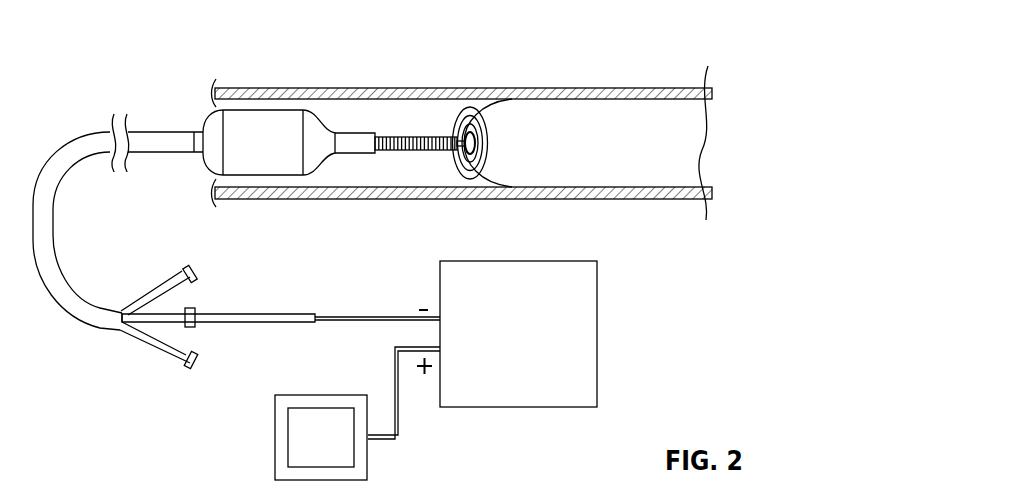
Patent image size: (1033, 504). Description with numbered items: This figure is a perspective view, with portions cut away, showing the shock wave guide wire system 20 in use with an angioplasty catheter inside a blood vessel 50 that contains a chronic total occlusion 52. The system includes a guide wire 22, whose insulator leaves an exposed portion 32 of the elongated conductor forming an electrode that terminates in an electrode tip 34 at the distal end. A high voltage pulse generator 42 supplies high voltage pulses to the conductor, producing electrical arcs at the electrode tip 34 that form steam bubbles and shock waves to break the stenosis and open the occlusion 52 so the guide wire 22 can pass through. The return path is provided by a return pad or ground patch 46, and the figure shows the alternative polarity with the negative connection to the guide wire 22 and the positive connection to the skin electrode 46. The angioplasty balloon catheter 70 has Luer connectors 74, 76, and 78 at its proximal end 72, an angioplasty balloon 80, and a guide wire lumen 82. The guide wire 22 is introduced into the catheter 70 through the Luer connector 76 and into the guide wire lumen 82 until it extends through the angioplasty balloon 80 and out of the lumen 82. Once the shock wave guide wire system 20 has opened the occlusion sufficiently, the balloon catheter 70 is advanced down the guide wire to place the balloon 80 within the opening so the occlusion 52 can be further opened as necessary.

The shock wave guide wire system 20 is at (241, 343).
The guide wire 22 is at (270, 314).
The exposed portion of the elongated conductor 32 is at (415, 136).
The electrode tip 34 is at (468, 122).
The high voltage pulse generator 42 is at (547, 260).
The return pad or ground patch 46 is at (275, 437).
The blood vessel 50 is at (560, 88).
The chronic total occlusion 52 is at (625, 108).
The angioplasty balloon catheter 70 is at (235, 97).
The proximal end of the catheter 72 is at (139, 284).
The Luer connector 74 is at (198, 274).
The Luer connector 76 is at (194, 308).
The Luer connector 78 is at (188, 368).
The angioplasty balloon 80 is at (297, 110).
The guide wire lumen 82 is at (378, 135).